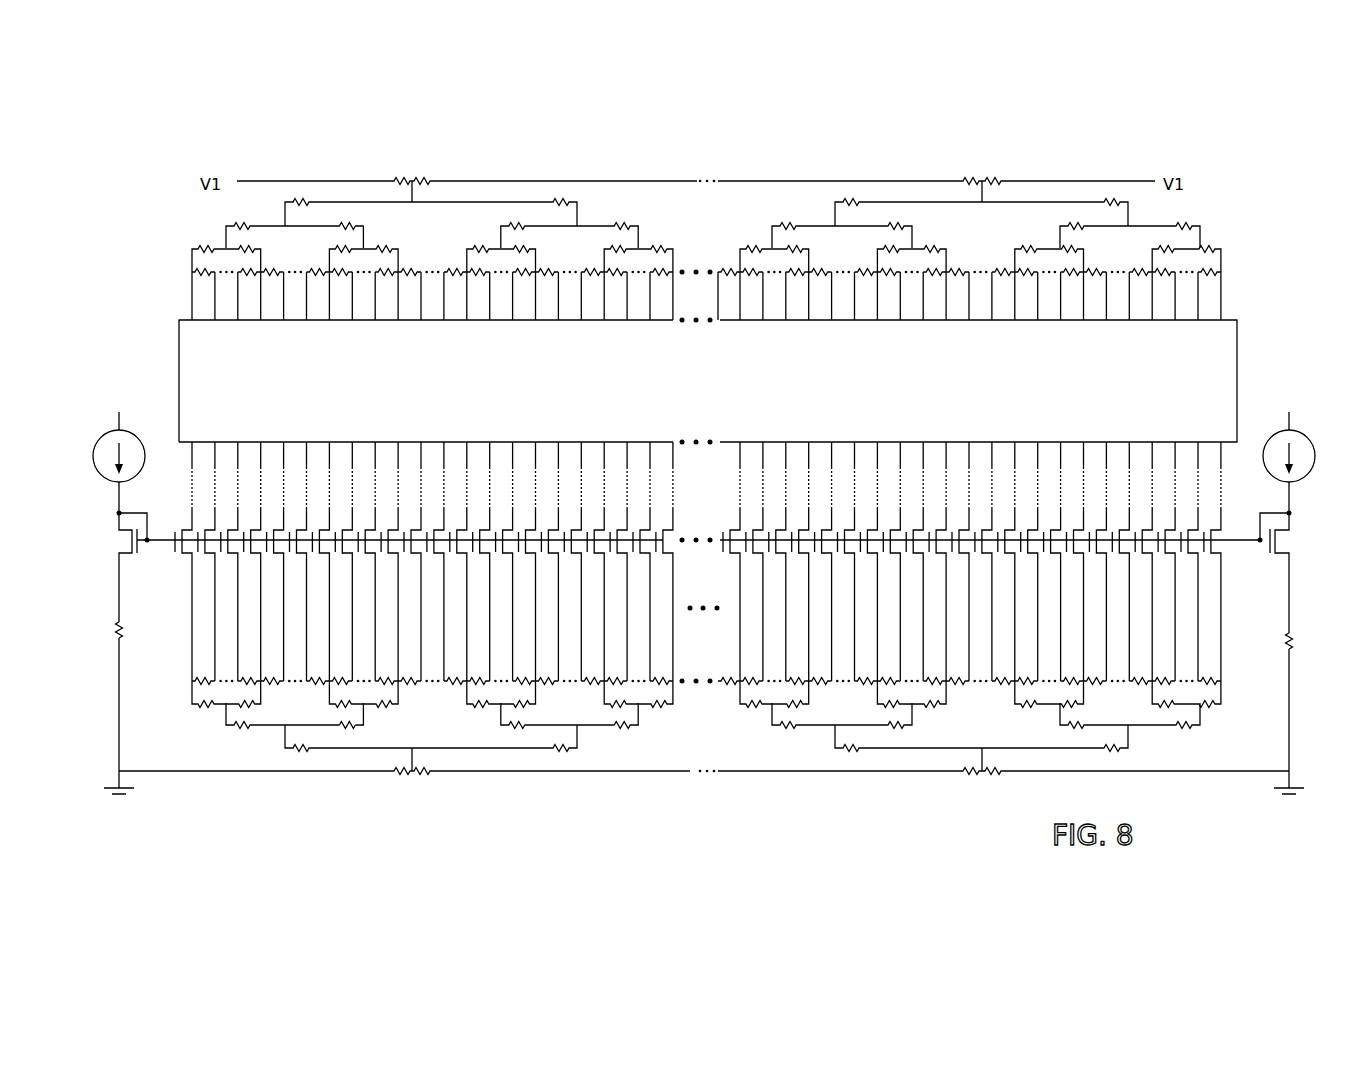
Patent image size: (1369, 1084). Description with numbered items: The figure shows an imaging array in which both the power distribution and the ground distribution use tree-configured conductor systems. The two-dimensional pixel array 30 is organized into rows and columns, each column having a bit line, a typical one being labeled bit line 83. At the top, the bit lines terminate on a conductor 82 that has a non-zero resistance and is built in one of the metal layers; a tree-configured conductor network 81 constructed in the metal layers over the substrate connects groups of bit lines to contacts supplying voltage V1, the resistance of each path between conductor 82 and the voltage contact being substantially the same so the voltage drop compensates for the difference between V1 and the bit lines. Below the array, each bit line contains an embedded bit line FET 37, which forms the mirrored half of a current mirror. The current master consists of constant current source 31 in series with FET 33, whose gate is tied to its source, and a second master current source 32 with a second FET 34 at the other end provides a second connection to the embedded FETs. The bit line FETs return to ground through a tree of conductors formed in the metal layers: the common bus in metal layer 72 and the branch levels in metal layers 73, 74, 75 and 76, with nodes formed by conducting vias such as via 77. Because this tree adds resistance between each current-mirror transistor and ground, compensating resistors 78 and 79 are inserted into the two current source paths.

The pixel array 30 is at (824, 395).
The constant current source 31 is at (1308, 438).
The second master current source 32 is at (130, 438).
The FET 33 is at (1288, 528).
The second FET 34 is at (127, 551).
The bit line FET 37 is at (1222, 553).
The metal layer 72 is at (182, 681).
The metal layer 73 is at (185, 703).
The metal layer 74 is at (220, 725).
The metal layer 75 is at (280, 748).
The metal layer 76 is at (110, 766).
The conducting via 77 is at (364, 721).
The compensating resistor 78 is at (115, 632).
The compensating resistor 79 is at (1293, 633).
The tree-configured conductor network 81 is at (1257, 170).
The conductor 82 is at (1222, 273).
The bit line 83 is at (191, 300).